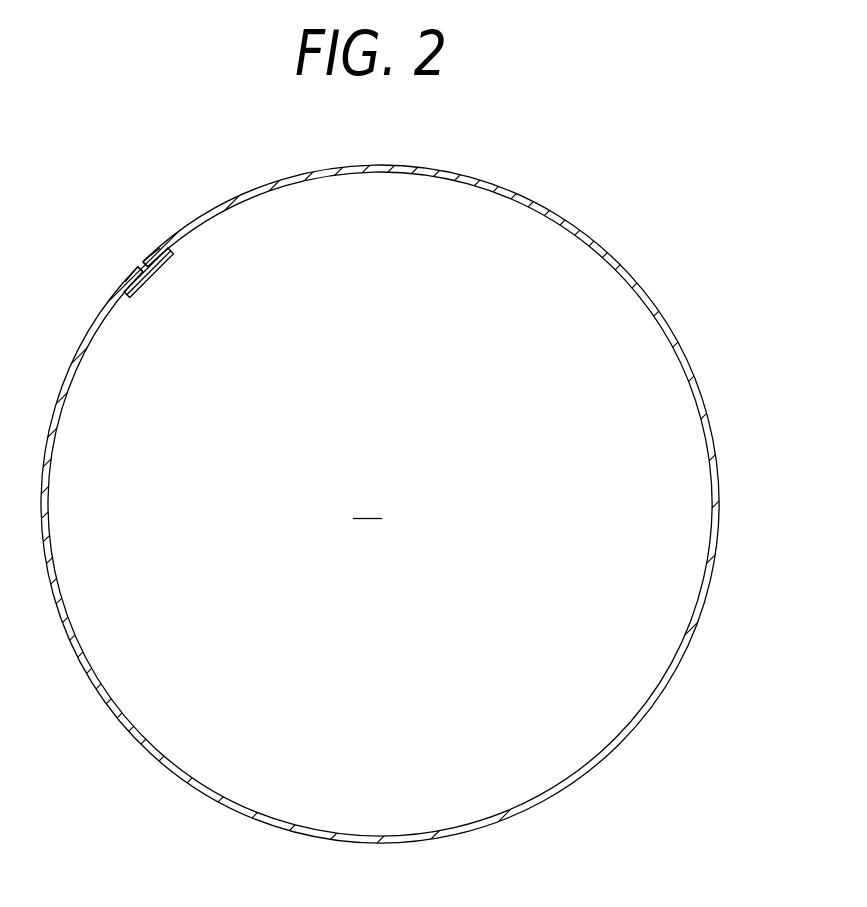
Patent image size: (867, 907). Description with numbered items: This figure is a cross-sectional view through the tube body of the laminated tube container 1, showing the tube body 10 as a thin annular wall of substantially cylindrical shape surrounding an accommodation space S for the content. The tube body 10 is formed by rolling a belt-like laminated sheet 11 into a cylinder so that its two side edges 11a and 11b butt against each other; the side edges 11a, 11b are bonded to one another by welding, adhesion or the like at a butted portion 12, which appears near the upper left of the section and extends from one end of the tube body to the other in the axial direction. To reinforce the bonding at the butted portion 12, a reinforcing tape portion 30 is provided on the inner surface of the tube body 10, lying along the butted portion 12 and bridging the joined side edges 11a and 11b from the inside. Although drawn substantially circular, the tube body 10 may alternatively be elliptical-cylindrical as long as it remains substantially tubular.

The laminated tube container 1 is at (669, 194).
The tube body 10 is at (433, 453).
The laminated sheet 11 is at (433, 453).
The side edge 11a is at (158, 251).
The side edge 11b is at (133, 275).
The butted portion 12 is at (136, 256).
The reinforcing tape portion 30 is at (146, 285).
The accommodation space S is at (367, 507).